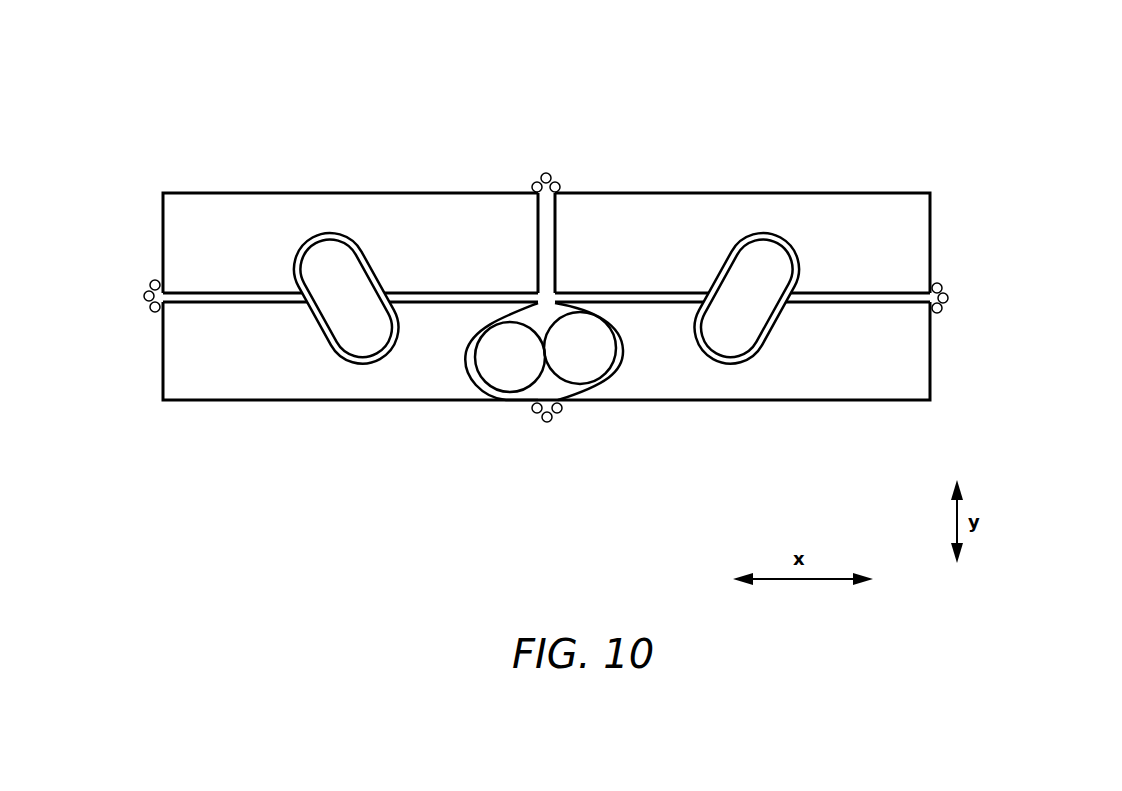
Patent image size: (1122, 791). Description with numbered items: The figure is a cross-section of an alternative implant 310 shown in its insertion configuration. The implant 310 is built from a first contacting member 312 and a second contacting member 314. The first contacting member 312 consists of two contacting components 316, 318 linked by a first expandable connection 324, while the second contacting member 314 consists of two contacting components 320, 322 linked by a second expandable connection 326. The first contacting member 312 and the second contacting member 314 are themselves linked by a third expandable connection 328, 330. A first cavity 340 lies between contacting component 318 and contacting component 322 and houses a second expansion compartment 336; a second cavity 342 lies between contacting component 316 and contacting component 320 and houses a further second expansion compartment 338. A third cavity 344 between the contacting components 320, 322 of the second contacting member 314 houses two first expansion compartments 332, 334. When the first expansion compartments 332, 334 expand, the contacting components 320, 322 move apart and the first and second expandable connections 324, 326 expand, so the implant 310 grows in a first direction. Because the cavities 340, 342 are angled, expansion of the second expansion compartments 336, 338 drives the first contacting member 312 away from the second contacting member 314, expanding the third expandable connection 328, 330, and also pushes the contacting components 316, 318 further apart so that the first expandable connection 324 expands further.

The implant 310 is at (962, 152).
The first contacting member 312 is at (960, 235).
The second contacting member 314 is at (962, 352).
The contacting component 316 is at (885, 222).
The contacting component 318 is at (208, 220).
The contacting component 320 is at (849, 367).
The contacting component 322 is at (260, 363).
The first expandable connection 324 is at (546, 172).
The second expandable connection 326 is at (548, 425).
The third expandable connection 328 is at (950, 300).
The third expandable connection 330 is at (144, 296).
The first expansion compartment 332 is at (490, 345).
The first expansion compartment 334 is at (592, 348).
The second expansion compartment 336 is at (321, 273).
The second expansion compartment 338 is at (773, 265).
The first cavity 340 is at (358, 252).
The second cavity 342 is at (736, 255).
The third cavity 344 is at (590, 397).